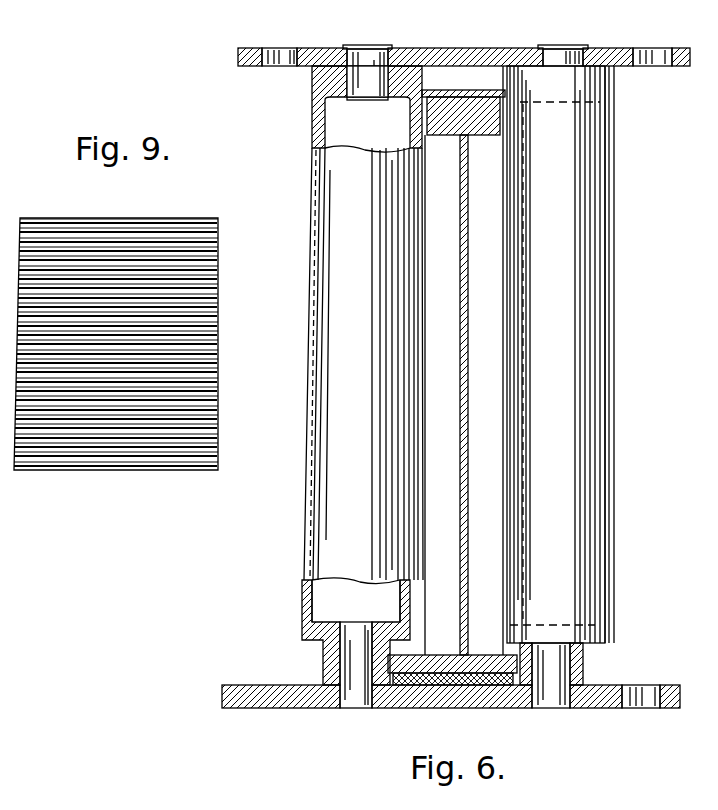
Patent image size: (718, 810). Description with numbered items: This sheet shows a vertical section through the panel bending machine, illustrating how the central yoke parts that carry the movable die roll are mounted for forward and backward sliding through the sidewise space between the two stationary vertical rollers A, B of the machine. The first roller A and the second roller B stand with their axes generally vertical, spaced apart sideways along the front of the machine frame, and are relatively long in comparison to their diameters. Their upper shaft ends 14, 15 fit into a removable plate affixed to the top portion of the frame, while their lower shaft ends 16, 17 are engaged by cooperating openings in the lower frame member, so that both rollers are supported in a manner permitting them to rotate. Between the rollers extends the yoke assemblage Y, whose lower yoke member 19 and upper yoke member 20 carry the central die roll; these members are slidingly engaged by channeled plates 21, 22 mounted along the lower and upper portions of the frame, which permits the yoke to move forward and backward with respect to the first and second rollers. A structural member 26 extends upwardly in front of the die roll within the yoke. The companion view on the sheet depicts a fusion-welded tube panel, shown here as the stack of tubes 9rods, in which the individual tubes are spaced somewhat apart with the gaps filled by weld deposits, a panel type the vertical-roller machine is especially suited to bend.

In FIG. 6, the upper shaft end 14 is at (365, 55).
In FIG. 6, the upper shaft end 15 is at (558, 60).
In FIG. 6, the lower shaft end 16 is at (354, 692).
In FIG. 6, the lower shaft end 17 is at (548, 700).
In FIG. 6, the lower yoke member 19 is at (437, 655).
In FIG. 6, the upper yoke member 20 is at (455, 138).
In FIG. 6, the channeled plate 21 is at (412, 688).
In FIG. 6, the channeled plate 22 is at (490, 92).
In FIG. 6, the structural member 26 is at (462, 385).
In FIG. 6, the first vertical roller A is at (303, 527).
In FIG. 6, the second vertical roller B is at (610, 540).
In FIG. 6, the yoke assemblage Y is at (492, 249).
In FIG. 9, the stack of rods 9rods is at (11, 379).